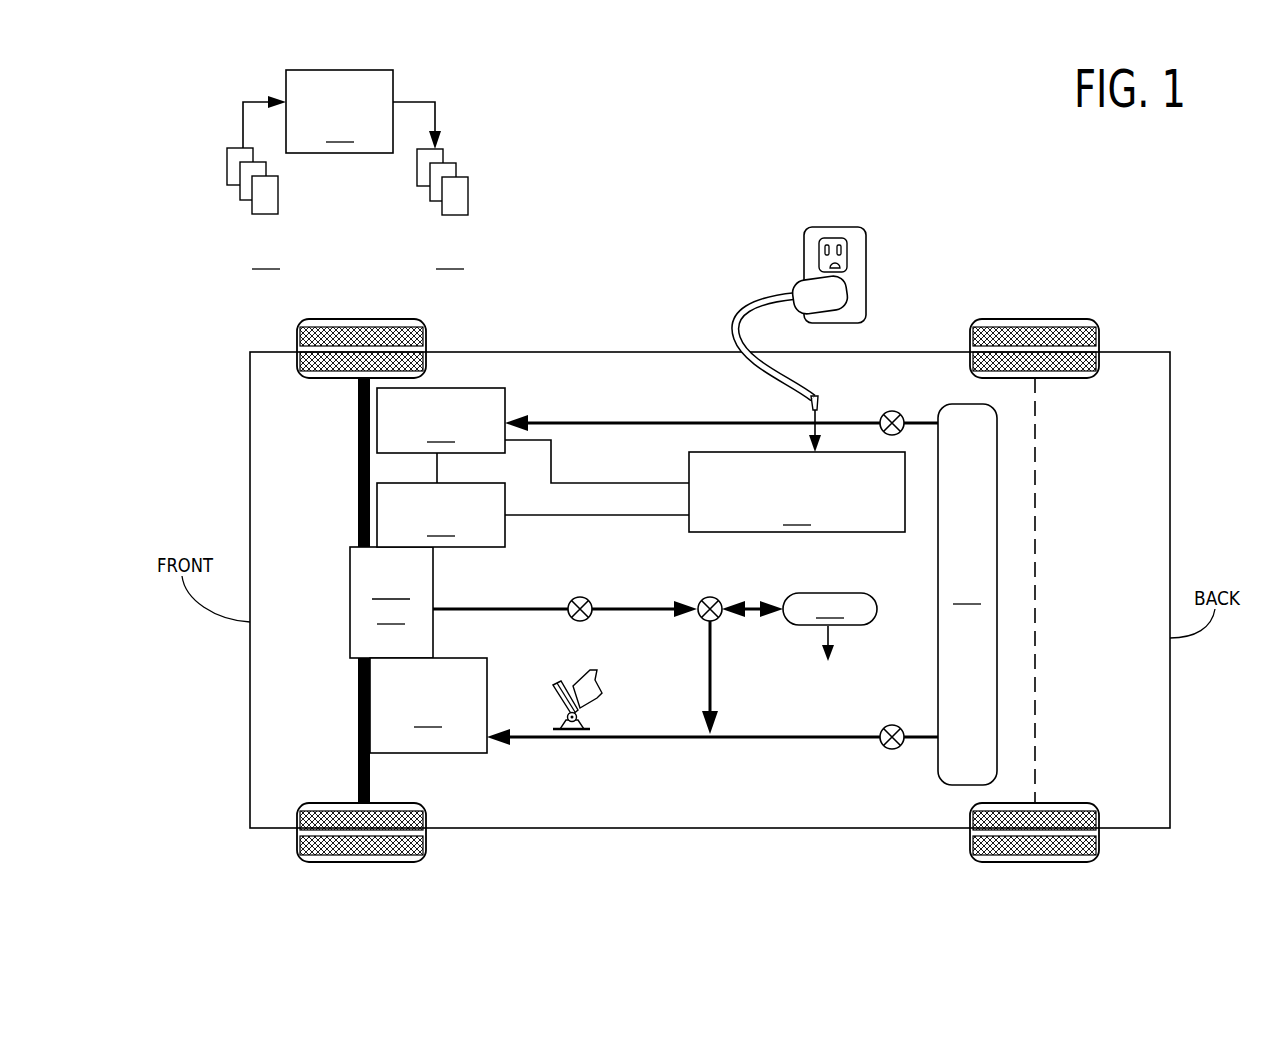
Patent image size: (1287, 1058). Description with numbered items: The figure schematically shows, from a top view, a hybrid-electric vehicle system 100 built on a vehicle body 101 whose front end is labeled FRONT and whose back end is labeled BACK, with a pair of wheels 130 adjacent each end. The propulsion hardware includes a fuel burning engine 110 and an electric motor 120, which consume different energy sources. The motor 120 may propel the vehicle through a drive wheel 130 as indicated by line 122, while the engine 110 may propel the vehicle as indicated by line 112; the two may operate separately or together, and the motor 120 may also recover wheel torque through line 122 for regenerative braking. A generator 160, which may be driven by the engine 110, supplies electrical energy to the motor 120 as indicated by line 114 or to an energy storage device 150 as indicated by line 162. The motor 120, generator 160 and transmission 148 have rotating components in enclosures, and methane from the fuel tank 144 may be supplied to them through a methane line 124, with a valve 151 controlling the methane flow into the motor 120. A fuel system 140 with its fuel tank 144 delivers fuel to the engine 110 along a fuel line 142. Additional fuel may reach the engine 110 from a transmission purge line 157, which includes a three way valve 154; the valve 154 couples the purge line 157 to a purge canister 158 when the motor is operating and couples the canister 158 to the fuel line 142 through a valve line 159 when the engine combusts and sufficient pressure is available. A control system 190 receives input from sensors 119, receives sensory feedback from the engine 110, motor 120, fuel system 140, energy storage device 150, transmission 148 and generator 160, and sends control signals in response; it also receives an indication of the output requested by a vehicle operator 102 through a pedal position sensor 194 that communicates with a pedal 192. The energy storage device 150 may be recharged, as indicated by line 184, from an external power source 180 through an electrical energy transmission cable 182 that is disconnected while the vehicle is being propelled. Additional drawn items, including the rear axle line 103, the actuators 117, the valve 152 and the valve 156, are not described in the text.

The vehicle system 100 is at (1141, 272).
The vehicle body 101 is at (528, 352).
The rear axle 103 is at (1036, 498).
The engine 110 is at (428, 705).
The line 112 is at (371, 792).
The line 114 is at (436, 462).
The actuators 117 is at (444, 186).
The sensors 119 is at (266, 183).
The motor 120 is at (441, 420).
The line 122 is at (358, 405).
The methane line 124 is at (637, 421).
The wheels 130 is at (327, 319).
The fuel system 140 is at (1037, 690).
The fuel line 142 is at (653, 740).
The fuel tank 144 is at (967, 594).
The transmission 148 is at (391, 602).
The energy storage device 150 is at (797, 492).
The valve 151 is at (888, 411).
The valve 152 is at (890, 725).
The three way valve 154 is at (710, 597).
The valve 156 is at (580, 597).
The transmission purge line 157 is at (498, 606).
The purge canister 158 is at (799, 642).
The valve line 159 is at (712, 665).
The generator 160 is at (441, 515).
The line 162 is at (642, 518).
The power source 180 is at (804, 255).
The electrical energy transmission cable 182 is at (737, 326).
The line 184 is at (812, 400).
The control system 190 is at (339, 111).
The pedal 192 is at (553, 698).
The pedal position sensor 194 is at (577, 714).
The vehicle operator 102 is at (586, 688).